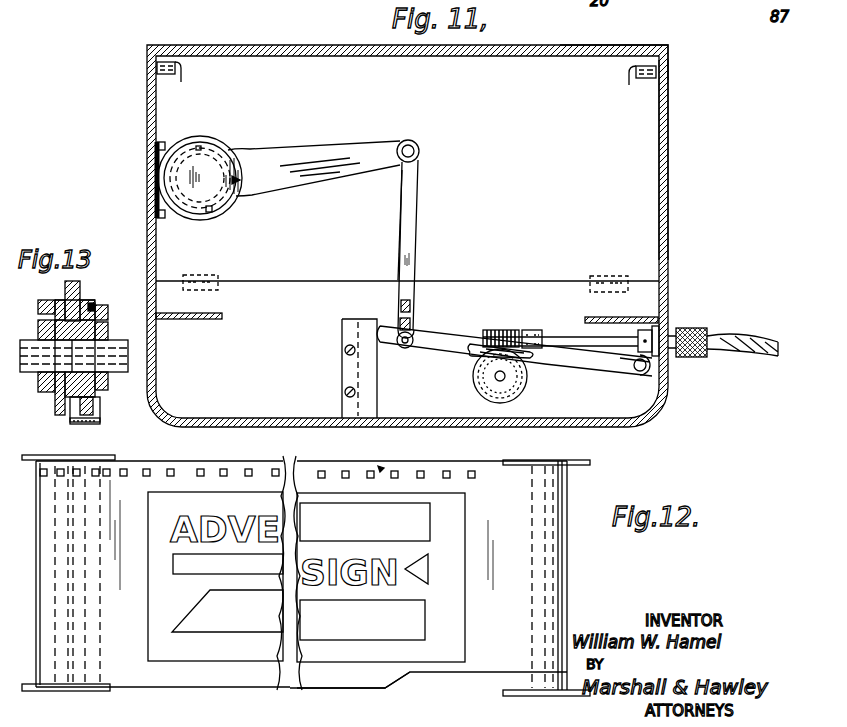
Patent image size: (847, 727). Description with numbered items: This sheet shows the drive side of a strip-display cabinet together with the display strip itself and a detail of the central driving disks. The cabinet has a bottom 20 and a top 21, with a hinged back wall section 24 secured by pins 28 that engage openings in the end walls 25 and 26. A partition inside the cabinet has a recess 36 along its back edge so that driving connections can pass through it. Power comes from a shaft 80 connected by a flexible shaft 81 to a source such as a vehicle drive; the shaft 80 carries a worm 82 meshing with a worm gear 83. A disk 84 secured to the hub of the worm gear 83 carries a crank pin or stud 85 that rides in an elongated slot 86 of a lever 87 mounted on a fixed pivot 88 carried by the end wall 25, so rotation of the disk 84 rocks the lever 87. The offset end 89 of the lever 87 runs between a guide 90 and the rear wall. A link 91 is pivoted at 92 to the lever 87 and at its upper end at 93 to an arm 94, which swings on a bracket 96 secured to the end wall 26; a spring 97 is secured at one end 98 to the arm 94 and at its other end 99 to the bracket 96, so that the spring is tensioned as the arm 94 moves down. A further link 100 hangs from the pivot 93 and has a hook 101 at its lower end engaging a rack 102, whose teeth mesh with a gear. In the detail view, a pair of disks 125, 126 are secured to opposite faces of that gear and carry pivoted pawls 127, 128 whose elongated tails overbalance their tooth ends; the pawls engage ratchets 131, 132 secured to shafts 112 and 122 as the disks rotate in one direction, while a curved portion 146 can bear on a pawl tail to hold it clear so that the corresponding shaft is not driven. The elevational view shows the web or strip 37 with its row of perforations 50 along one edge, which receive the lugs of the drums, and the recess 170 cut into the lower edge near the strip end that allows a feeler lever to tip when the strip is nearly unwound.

In FIG. 11, the bottom 20 is at (618, 430).
In FIG. 11, the top 21 is at (664, 47).
In FIG. 11, the hinged back wall section 24 is at (645, 116).
In FIG. 11, the end wall 25 is at (668, 166).
In FIG. 11, the end wall 26 is at (148, 218).
In FIG. 11, the pins 28 is at (180, 68).
In FIG. 11, the recess 36 is at (572, 320).
In FIG. 12, the web or strip 37 is at (520, 463).
In FIG. 12, the perforations 50 is at (452, 478).
In FIG. 11, the shaft 80 is at (650, 330).
In FIG. 11, the flexible shaft 81 is at (720, 346).
In FIG. 11, the worm 82 is at (503, 330).
In FIG. 11, the worm gear 83 is at (478, 377).
In FIG. 11, the disk 84 is at (480, 386).
In FIG. 11, the crank pin or stud 85 is at (492, 348).
In FIG. 11, the elongated slot 86 is at (530, 360).
In FIG. 11, the lever 87 is at (584, 372).
In FIG. 11, the fixed pivot 88 is at (650, 368).
In FIG. 11, the offset end of lever 89 is at (382, 326).
In FIG. 11, the guide 90 is at (344, 373).
In FIG. 11, the link 91 is at (416, 232).
In FIG. 11, the pivot 92 is at (414, 342).
In FIG. 11, the pivot 93 is at (420, 150).
In FIG. 11, the arm 94 is at (372, 142).
In FIG. 11, the bracket 96 is at (158, 150).
In FIG. 11, the spring 97 is at (205, 160).
In FIG. 11, the spring end 98 is at (210, 214).
In FIG. 11, the spring end 99 is at (240, 180).
In FIG. 11, the link 100 is at (414, 206).
In FIG. 11, the hook 101 is at (418, 312).
In FIG. 13, the rack 102 is at (76, 290).
In FIG. 13, the shaft 112 is at (112, 376).
In FIG. 13, the shaft 122 is at (40, 376).
In FIG. 13, the disk 125 is at (58, 300).
In FIG. 13, the disk 126 is at (86, 304).
In FIG. 13, the pawl 127 is at (40, 308).
In FIG. 13, the pawl 128 is at (104, 312).
In FIG. 13, the ratchet 131 is at (100, 400).
In FIG. 13, the ratchet 132 is at (40, 330).
In FIG. 13, the curved portion 146 is at (85, 424).
In FIG. 12, the recess 170 is at (422, 674).